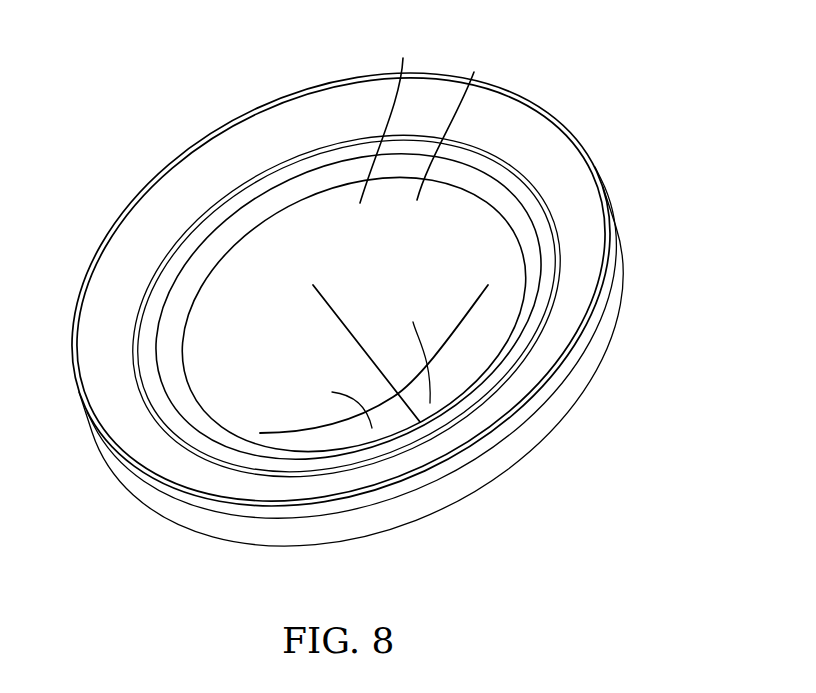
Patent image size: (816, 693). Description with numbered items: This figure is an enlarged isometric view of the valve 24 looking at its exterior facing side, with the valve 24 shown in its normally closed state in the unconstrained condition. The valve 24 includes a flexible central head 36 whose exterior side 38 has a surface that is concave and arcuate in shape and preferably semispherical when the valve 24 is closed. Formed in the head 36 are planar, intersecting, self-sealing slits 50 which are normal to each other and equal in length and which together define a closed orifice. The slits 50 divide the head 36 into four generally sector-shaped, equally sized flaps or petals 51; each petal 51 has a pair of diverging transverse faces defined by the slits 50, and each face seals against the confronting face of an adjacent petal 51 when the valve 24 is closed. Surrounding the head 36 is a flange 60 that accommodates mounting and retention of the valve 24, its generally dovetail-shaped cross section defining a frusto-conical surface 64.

The valve 24 is at (588, 76).
The head 36 is at (477, 78).
The exterior side 38 is at (354, 266).
The slits 50 is at (323, 296).
The petals 51 is at (368, 392).
The flange 60 is at (556, 395).
The frusto-conical surface 64 is at (135, 250).